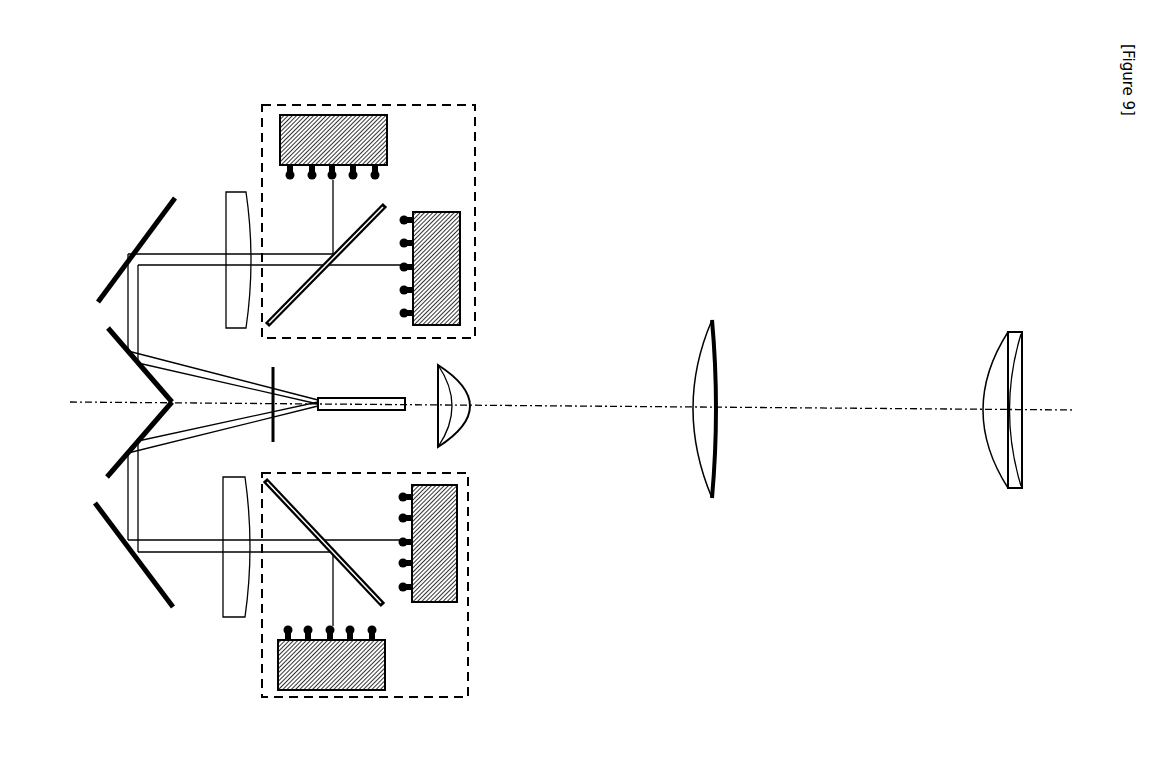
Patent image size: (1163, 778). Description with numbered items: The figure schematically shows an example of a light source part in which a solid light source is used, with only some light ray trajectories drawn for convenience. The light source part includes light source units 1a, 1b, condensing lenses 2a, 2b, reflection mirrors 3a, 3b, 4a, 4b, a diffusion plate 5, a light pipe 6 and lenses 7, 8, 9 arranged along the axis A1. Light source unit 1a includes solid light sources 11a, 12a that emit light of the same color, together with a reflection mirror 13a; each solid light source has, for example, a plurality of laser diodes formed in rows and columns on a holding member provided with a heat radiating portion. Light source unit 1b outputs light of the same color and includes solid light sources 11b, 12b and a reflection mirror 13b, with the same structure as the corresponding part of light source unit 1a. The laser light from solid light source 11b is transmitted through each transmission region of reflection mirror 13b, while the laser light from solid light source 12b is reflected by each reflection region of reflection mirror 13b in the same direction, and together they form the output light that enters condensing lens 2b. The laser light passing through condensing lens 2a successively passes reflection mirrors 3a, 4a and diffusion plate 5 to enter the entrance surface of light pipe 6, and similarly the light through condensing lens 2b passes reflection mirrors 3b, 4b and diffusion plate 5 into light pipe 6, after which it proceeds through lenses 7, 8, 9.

The light source unit 1a is at (477, 108).
The light source unit 1b is at (468, 483).
The condensing lens 2a is at (236, 192).
The condensing lens 2b is at (242, 618).
The reflection mirror 3a is at (170, 203).
The reflection mirror 3b is at (157, 593).
The reflection mirror 4a is at (128, 350).
The reflection mirror 4b is at (127, 456).
The diffusion plate 5 is at (273, 370).
The light pipe 6 is at (350, 398).
The lens 7 is at (463, 375).
The lens 8 is at (707, 330).
The lens 9 is at (997, 358).
The solid light source 11a is at (460, 213).
The solid light source 11b is at (457, 602).
The solid light source 12a is at (330, 115).
The solid light source 12b is at (378, 688).
The reflection mirror 13a is at (385, 207).
The reflection mirror 13b is at (383, 605).
The optical axis A1 is at (572, 398).